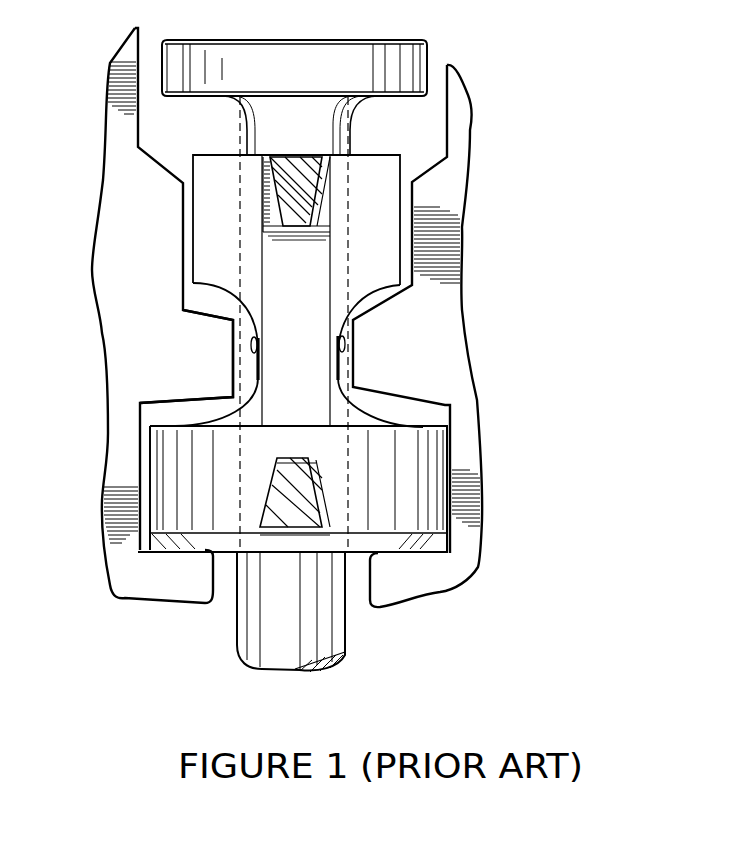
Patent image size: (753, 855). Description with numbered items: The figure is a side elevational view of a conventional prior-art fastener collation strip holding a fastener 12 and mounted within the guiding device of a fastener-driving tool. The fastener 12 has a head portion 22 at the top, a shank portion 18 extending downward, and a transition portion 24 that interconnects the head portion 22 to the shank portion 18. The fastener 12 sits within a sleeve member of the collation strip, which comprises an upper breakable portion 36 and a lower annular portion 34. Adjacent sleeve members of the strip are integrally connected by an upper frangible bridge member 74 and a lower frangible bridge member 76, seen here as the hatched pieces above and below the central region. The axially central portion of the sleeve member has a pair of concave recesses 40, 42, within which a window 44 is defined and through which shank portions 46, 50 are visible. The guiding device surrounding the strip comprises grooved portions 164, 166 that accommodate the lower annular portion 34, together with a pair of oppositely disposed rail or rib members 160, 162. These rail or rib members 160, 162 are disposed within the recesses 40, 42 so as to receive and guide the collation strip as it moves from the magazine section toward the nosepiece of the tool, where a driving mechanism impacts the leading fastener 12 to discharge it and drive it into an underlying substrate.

The fastener 12 is at (294, 336).
The head portion 22 is at (238, 57).
The transition portion 24 is at (368, 100).
The shank portion 18 is at (305, 640).
The upper frangible bridge member 74 is at (300, 163).
The lower frangible bridge member 76 is at (267, 533).
The upper breakable portion 36 is at (285, 270).
The lower annular portion 34 is at (257, 506).
The window 44 is at (257, 338).
The shank portion 46 is at (247, 340).
The shank portion 50 is at (353, 337).
The concave recess 40 is at (172, 403).
The concave recess 42 is at (378, 425).
The rail or rib member 160 is at (226, 384).
The rail or rib member 162 is at (407, 379).
The grooved portion 164 is at (138, 447).
The grooved portion 166 is at (448, 422).